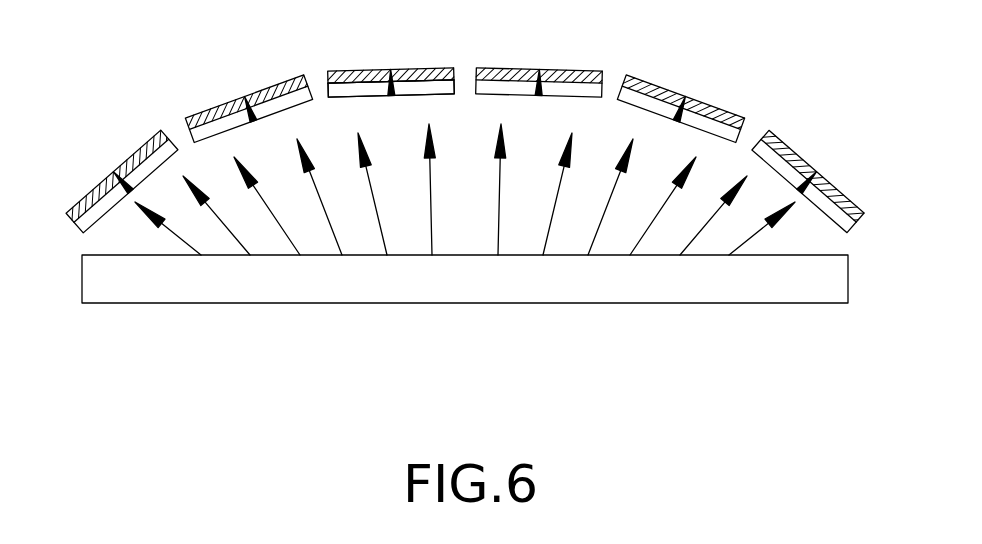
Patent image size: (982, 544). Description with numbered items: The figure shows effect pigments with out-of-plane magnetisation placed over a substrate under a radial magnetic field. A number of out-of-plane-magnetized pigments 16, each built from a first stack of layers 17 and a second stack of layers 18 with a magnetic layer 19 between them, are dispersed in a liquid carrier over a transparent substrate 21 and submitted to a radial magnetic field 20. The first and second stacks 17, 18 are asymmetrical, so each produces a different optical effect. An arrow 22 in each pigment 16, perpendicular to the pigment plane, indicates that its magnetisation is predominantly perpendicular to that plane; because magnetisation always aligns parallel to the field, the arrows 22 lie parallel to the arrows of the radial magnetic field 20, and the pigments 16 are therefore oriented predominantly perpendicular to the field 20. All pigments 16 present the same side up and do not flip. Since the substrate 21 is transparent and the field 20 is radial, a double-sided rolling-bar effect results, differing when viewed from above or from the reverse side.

The out-of-plane-magnetized pigments 16 is at (147, 135).
The first stack of layers 17 is at (353, 70).
The second stack of layers 18 is at (432, 95).
The magnetic layer 19 is at (448, 82).
The radial magnetic field 20 is at (747, 255).
The transparent substrate 21 is at (640, 287).
The arrow 22 is at (543, 88).